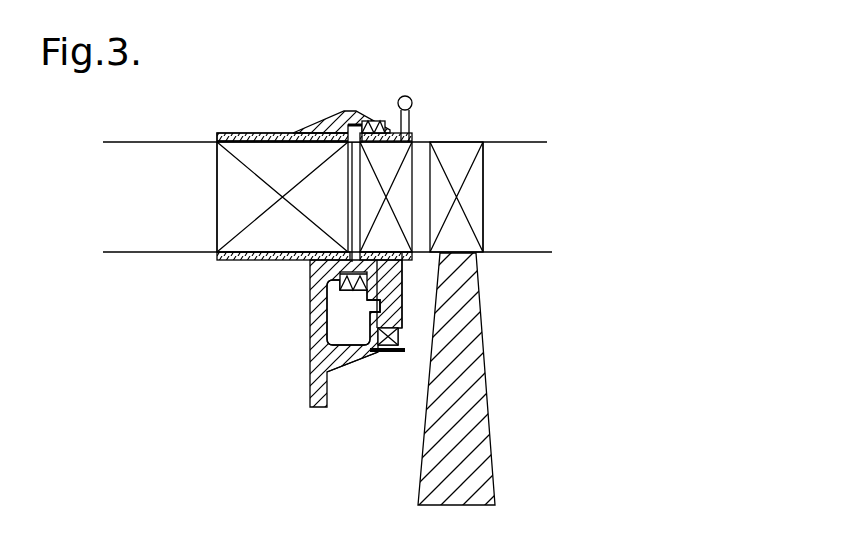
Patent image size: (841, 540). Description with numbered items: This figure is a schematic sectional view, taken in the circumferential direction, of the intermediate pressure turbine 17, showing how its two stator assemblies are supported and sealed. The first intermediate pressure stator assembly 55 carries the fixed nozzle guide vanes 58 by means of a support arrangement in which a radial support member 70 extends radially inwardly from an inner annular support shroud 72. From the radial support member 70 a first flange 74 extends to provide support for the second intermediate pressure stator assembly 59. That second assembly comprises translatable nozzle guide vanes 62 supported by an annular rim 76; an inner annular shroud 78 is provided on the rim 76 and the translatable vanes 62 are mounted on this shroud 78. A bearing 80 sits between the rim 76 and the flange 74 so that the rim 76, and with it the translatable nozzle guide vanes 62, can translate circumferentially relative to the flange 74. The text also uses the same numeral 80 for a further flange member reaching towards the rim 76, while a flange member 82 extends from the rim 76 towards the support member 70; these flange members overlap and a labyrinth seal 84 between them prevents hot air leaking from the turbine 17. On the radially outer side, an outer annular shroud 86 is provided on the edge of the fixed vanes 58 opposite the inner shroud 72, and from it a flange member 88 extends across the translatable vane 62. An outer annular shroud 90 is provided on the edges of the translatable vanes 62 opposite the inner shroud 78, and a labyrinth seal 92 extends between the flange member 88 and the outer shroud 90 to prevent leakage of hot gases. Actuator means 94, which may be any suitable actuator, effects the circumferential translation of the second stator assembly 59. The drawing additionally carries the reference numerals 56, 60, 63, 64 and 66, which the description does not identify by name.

The intermediate pressure turbine 17 is at (222, 78).
The first intermediate pressure stator assembly 55 is at (232, 178).
The outer race 56 is at (212, 218).
The fixed nozzle guide vanes 58 is at (258, 258).
The second intermediate pressure stator assembly 59 is at (410, 257).
The second bearing 60 is at (414, 176).
The translatable nozzle guide vanes 62 is at (403, 201).
The shaft 63 is at (468, 147).
The shaft end 64 is at (495, 232).
The third bearing 66 is at (475, 205).
The radial support member 70 is at (312, 393).
The inner annular support shroud 72 is at (217, 262).
The first flange 74 is at (345, 365).
The annular rim 76 is at (372, 333).
The inner annular shroud 78 is at (428, 296).
The bearing 80 is at (338, 276).
The flange member 82 is at (327, 312).
The labyrinth seal 84 is at (408, 262).
The outer annular shroud 86 is at (222, 132).
The flange member 88 is at (320, 130).
The outer annular shroud 90 is at (392, 128).
The labyrinth seal 92 is at (356, 111).
The actuator means 94 is at (414, 100).